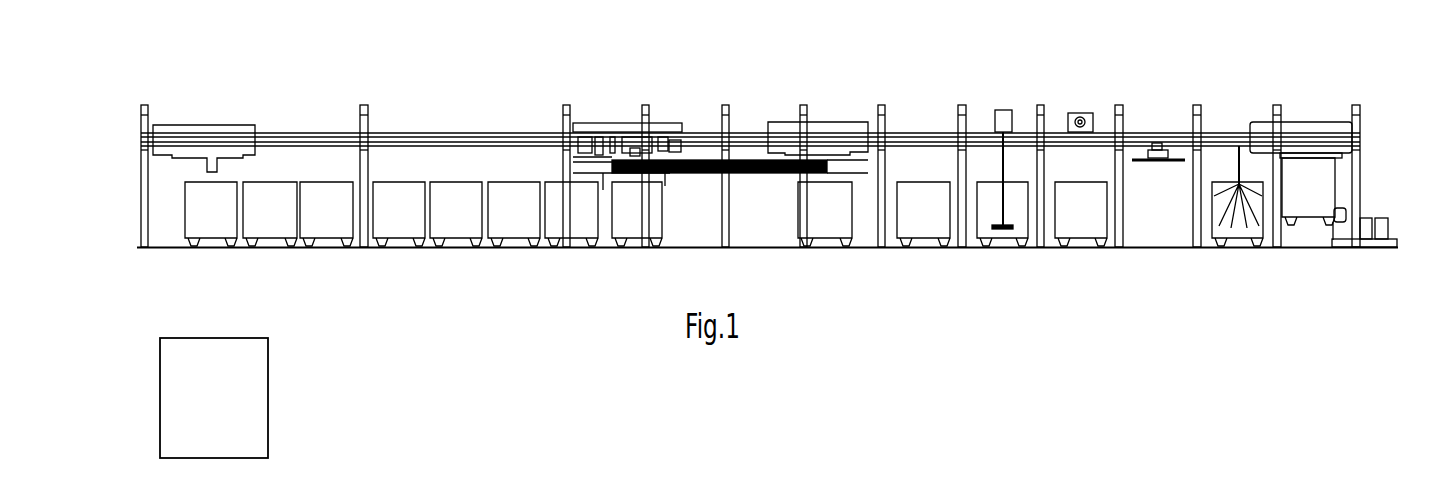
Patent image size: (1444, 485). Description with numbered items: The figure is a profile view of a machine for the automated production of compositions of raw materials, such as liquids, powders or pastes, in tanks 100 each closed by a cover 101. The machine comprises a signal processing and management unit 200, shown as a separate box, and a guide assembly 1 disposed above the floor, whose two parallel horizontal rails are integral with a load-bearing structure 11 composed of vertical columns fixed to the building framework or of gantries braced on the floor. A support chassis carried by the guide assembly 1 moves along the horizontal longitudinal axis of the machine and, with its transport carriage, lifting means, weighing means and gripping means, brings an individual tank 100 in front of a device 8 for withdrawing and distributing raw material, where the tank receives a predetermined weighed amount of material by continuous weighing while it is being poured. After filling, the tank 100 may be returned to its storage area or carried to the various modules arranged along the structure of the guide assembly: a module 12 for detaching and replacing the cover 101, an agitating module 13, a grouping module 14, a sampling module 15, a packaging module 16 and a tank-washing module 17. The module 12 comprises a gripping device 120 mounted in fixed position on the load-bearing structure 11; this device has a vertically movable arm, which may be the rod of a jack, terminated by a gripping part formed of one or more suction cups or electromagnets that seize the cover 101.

The guide assembly 1 is at (297, 137).
The load-bearing structure 11 is at (368, 119).
The device for withdrawing and distributing raw material 8 is at (667, 173).
The module for detaching and replacing cover 12 is at (1153, 143).
The agitating module 13 is at (990, 157).
The grouping module 14 is at (923, 173).
The sampling module 15 is at (1063, 177).
The packaging module 16 is at (1340, 204).
The tank-washing module 17 is at (1225, 163).
The tank 100 is at (323, 225).
The cover 101 is at (1140, 170).
The gripping device 120 is at (1183, 150).
The signal processing and management unit 200 is at (252, 422).